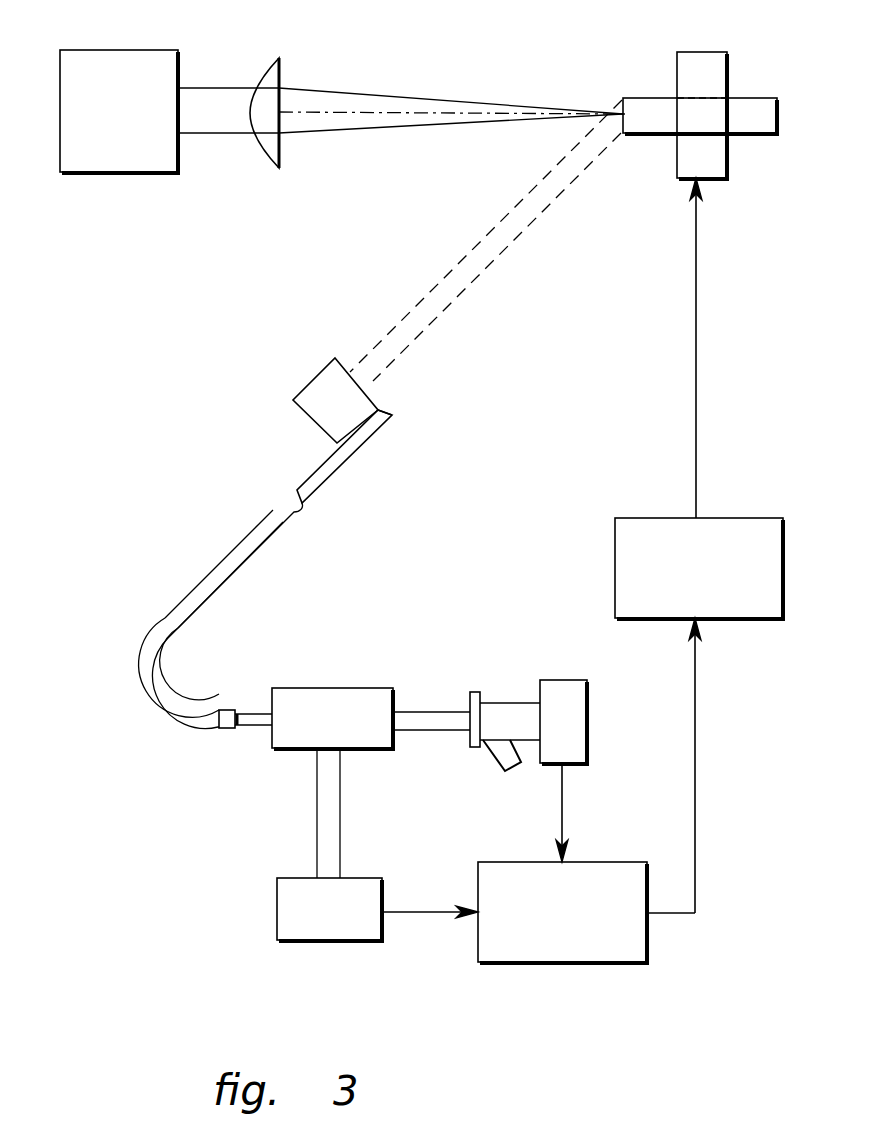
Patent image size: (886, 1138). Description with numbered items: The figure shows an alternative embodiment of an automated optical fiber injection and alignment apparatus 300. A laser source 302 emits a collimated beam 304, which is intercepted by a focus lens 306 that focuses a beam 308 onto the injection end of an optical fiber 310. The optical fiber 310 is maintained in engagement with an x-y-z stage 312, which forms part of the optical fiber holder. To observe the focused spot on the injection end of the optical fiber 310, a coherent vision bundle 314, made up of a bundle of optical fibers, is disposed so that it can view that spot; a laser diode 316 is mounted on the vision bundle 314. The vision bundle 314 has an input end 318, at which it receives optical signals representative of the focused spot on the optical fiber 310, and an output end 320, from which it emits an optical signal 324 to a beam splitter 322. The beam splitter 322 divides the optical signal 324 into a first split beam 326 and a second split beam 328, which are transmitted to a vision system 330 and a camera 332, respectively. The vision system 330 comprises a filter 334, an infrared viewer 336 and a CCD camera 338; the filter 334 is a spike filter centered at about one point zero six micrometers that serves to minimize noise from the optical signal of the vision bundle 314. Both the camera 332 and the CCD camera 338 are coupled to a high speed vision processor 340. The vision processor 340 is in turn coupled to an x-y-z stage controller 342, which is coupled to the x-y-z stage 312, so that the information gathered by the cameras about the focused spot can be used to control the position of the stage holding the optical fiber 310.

The apparatus 300 is at (380, 28).
The laser source 302 is at (110, 50).
The collimated beam 304 is at (228, 135).
The focus lens 306 is at (280, 148).
The focused beam 308 is at (420, 96).
The optical fiber 310 is at (637, 98).
The x-y-z stage 312 is at (690, 52).
The coherent vision bundle 314 is at (367, 440).
The laser diode 316 is at (300, 380).
The input end 318 is at (396, 414).
The output end 320 is at (226, 730).
The beam splitter 322 is at (336, 688).
The optical signal 324 is at (254, 713).
The first split beam 326 is at (426, 712).
The second split beam 328 is at (317, 814).
The vision system 330 is at (482, 631).
The camera 332 is at (277, 897).
The filter 334 is at (474, 748).
The infrared viewer 336 is at (500, 703).
The CCD camera 338 is at (590, 702).
The high speed vision processor 340 is at (478, 940).
The x-y-z stage controller 342 is at (638, 518).